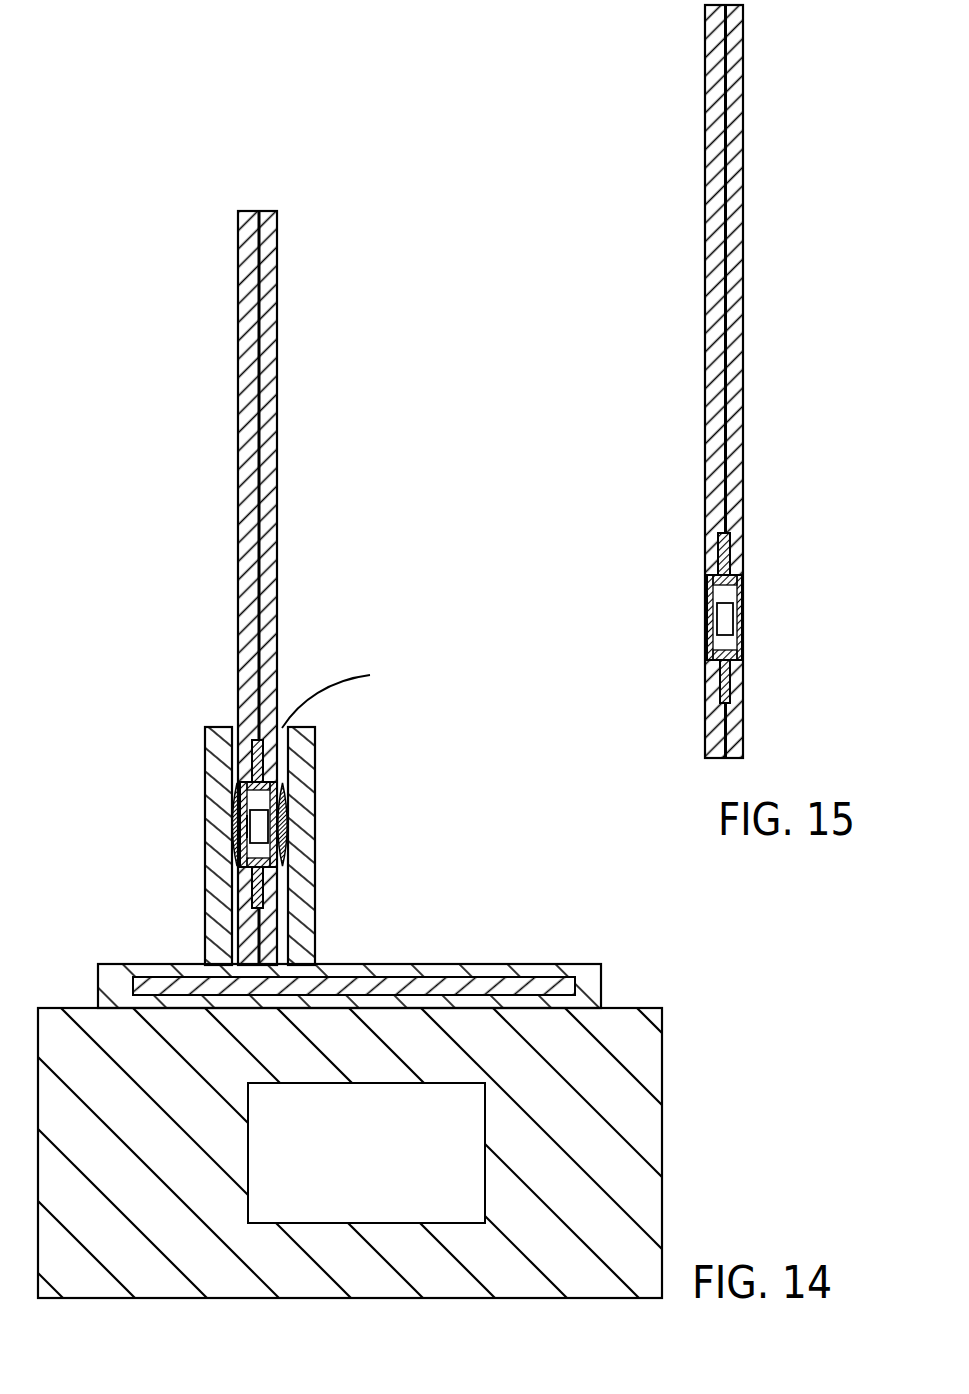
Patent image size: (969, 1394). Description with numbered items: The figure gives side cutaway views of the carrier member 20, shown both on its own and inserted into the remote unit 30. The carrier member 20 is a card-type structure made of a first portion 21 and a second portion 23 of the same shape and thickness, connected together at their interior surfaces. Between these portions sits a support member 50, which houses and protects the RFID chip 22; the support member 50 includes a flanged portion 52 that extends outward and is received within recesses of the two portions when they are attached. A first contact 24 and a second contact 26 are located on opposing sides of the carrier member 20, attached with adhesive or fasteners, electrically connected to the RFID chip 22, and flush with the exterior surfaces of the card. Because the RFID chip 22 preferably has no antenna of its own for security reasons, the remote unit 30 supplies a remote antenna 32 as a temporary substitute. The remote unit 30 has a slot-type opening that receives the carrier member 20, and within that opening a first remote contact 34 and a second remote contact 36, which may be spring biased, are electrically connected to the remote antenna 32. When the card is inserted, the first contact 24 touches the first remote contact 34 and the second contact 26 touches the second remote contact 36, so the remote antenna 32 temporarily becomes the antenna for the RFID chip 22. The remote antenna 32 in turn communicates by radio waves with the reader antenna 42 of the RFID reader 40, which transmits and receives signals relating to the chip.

In FIG. 14, the carrier member 20 is at (286, 588).
In FIG. 15, the carrier member 20 is at (753, 381).
In FIG. 14, the first portion 21 is at (247, 470).
In FIG. 15, the first portion 21 is at (711, 218).
In FIG. 15, the RFID chip 22 is at (725, 625).
In FIG. 14, the second portion 23 is at (270, 470).
In FIG. 15, the second portion 23 is at (737, 218).
In FIG. 14, the first contact 24 is at (263, 824).
In FIG. 15, the first contact 24 is at (722, 627).
In FIG. 14, the second contact 26 is at (277, 843).
In FIG. 15, the second contact 26 is at (738, 618).
In FIG. 14, the remote unit 30 is at (320, 891).
In FIG. 14, the remote antenna 32 is at (425, 989).
In FIG. 14, the first remote contact 34 is at (232, 813).
In FIG. 14, the second remote contact 36 is at (285, 797).
In FIG. 14, the RFID reader 40 is at (382, 1140).
In FIG. 14, the reader antenna 42 is at (349, 1210).
In FIG. 15, the support member 50 is at (736, 549).
In FIG. 15, the flanged portion 52 is at (728, 690).